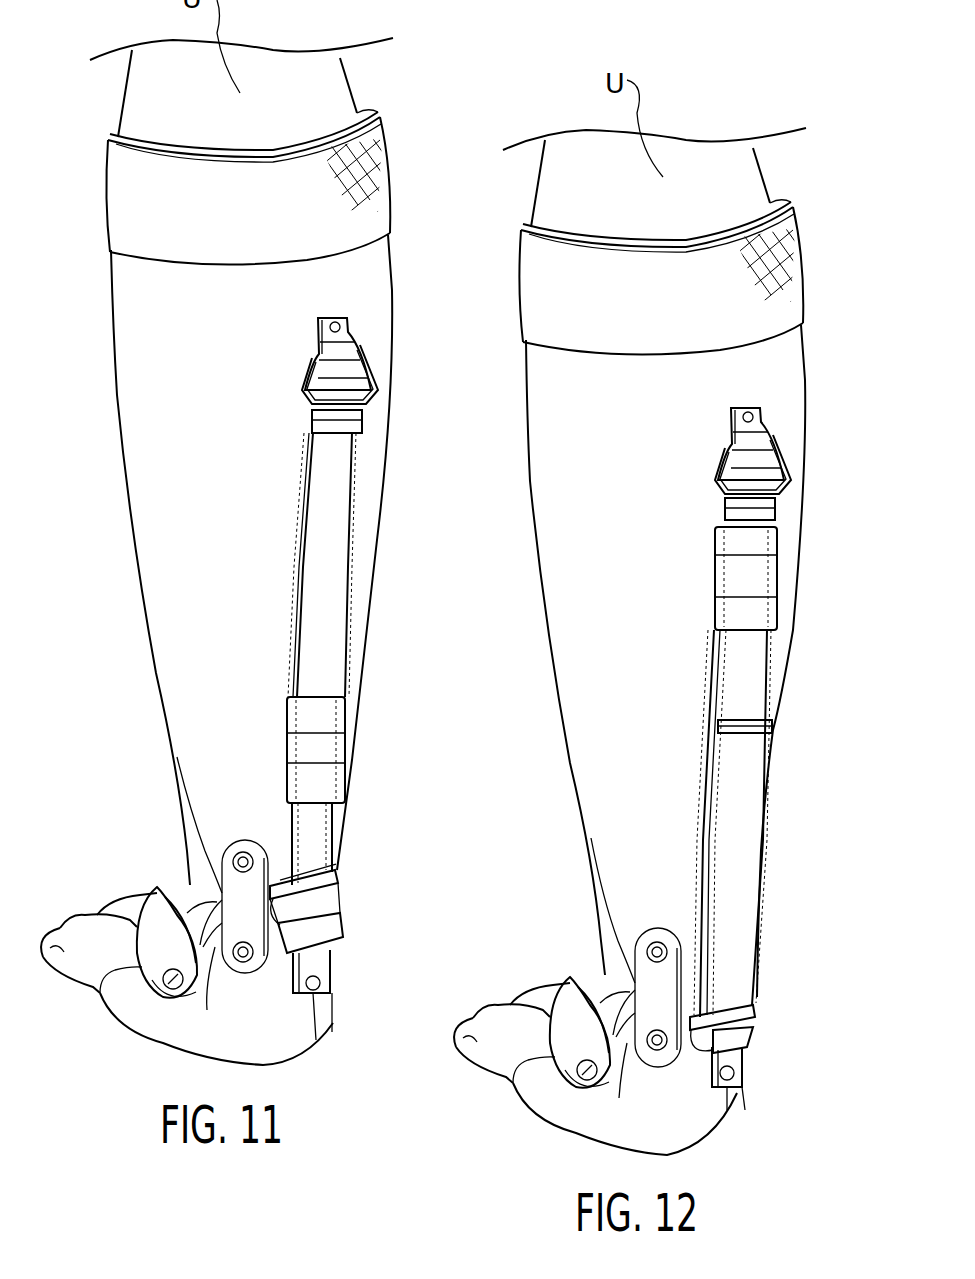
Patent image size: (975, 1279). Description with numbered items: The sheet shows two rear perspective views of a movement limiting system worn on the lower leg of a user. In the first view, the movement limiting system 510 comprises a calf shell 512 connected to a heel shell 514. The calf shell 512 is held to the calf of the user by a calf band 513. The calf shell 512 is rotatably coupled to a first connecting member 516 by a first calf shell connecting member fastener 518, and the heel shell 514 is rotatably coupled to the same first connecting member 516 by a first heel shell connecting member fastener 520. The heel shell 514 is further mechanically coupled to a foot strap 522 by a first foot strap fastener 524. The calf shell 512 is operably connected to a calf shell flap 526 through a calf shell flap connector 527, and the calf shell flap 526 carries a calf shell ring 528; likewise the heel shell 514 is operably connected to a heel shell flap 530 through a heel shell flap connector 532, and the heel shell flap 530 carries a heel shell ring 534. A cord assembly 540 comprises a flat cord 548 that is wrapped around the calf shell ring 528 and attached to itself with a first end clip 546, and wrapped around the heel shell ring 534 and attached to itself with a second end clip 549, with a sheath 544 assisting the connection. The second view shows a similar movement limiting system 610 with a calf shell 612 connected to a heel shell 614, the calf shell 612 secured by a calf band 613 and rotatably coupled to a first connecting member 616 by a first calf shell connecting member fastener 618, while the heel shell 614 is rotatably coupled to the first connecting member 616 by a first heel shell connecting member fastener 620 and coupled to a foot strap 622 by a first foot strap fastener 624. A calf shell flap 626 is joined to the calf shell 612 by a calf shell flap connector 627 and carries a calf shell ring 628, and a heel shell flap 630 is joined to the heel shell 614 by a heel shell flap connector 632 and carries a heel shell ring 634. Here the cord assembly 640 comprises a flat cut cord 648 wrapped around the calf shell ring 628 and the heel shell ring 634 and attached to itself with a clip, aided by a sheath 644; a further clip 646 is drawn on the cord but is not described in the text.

In FIG. 11, the movement limiting system 510 is at (318, 1110).
In FIG. 11, the calf shell 512 is at (260, 529).
In FIG. 11, the calf band 513 is at (385, 178).
In FIG. 11, the heel shell 514 is at (163, 1020).
In FIG. 11, the first connecting member 516 is at (213, 975).
In FIG. 11, the first calf shell connecting member fastener 518 is at (246, 858).
In FIG. 11, the first heel shell connecting member fastener 520 is at (250, 968).
In FIG. 11, the foot strap 522 is at (158, 912).
In FIG. 11, the first foot strap fastener 524 is at (168, 982).
In FIG. 11, the calf shell flap 526 is at (318, 327).
In FIG. 11, the calf shell flap connector 527 is at (340, 322).
In FIG. 11, the calf shell ring 528 is at (308, 375).
In FIG. 11, the heel shell flap 530 is at (328, 972).
In FIG. 11, the heel shell flap connector 532 is at (318, 1005).
In FIG. 11, the heel shell ring 534 is at (347, 923).
In FIG. 11, the cord assembly 540 is at (362, 668).
In FIG. 11, the sheath 544 is at (330, 755).
In FIG. 11, the first end clip 546 is at (364, 430).
In FIG. 11, the flat cord 548 is at (297, 625).
In FIG. 11, the second end clip 549 is at (338, 871).
In FIG. 12, the movement limiting system 610 is at (779, 1216).
In FIG. 12, the calf shell 612 is at (665, 681).
In FIG. 12, the calf band 613 is at (694, 277).
In FIG. 12, the heel shell 614 is at (595, 1076).
In FIG. 12, the first connecting member 616 is at (623, 1058).
In FIG. 12, the first calf shell connecting member fastener 618 is at (662, 966).
In FIG. 12, the first heel shell connecting member fastener 620 is at (666, 1034).
In FIG. 12, the foot strap 622 is at (546, 1007).
In FIG. 12, the first foot strap fastener 624 is at (524, 1100).
In FIG. 12, the calf shell flap 626 is at (718, 437).
In FIG. 12, the calf shell flap connector 627 is at (808, 394).
In FIG. 12, the calf shell ring 628 is at (716, 464).
In FIG. 12, the heel shell flap 630 is at (759, 1101).
In FIG. 12, the heel shell flap connector 632 is at (757, 1110).
In FIG. 12, the heel shell ring 634 is at (758, 1046).
In FIG. 12, the cord assembly 640 is at (791, 823).
In FIG. 12, the sheath 644 is at (785, 564).
In FIG. 12, the crossbar 646 is at (772, 762).
In FIG. 12, the flat cut cord 648 is at (678, 822).